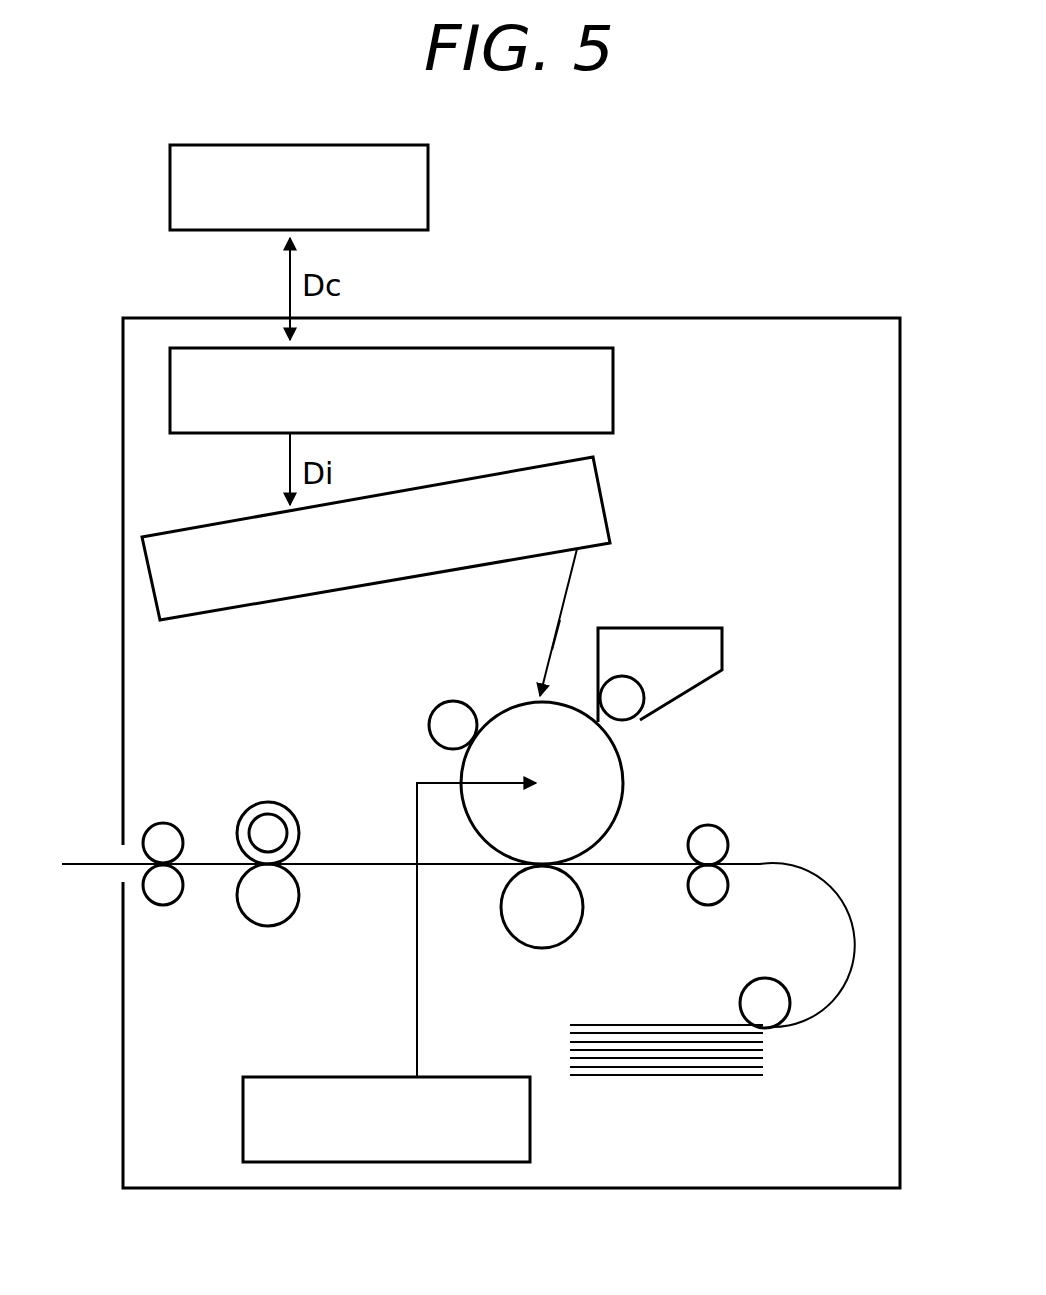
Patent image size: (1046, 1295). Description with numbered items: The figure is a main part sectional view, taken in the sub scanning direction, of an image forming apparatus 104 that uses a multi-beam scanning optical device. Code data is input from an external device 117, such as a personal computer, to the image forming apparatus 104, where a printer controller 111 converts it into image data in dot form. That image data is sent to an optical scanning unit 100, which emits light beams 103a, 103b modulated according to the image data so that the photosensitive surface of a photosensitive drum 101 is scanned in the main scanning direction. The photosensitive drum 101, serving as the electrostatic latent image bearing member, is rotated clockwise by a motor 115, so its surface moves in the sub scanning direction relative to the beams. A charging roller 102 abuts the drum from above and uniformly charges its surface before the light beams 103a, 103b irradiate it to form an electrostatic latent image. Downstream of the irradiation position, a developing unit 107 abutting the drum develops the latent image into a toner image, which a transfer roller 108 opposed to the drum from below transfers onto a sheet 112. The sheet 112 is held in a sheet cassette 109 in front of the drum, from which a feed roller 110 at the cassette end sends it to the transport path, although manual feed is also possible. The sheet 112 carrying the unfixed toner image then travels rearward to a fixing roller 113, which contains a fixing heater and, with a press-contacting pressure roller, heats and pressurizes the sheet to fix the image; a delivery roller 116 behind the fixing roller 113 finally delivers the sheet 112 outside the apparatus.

The optical scanning unit 100 is at (600, 482).
The photosensitive drum 101 is at (612, 796).
The charging roller 102 is at (442, 716).
The light beam 103a is at (560, 612).
The light beam 103b is at (571, 582).
The image forming apparatus 104 is at (848, 318).
The developing unit 107 is at (714, 641).
The transfer roller 108 is at (527, 932).
The sheet cassette 109 is at (740, 1078).
The feed roller 110 is at (772, 992).
The printer controller 111 is at (614, 380).
The sheet 112 is at (355, 863).
The fixing roller 113 is at (262, 810).
The motor 115 is at (530, 1138).
The delivery roller 116 is at (163, 835).
The external device 117 is at (429, 166).